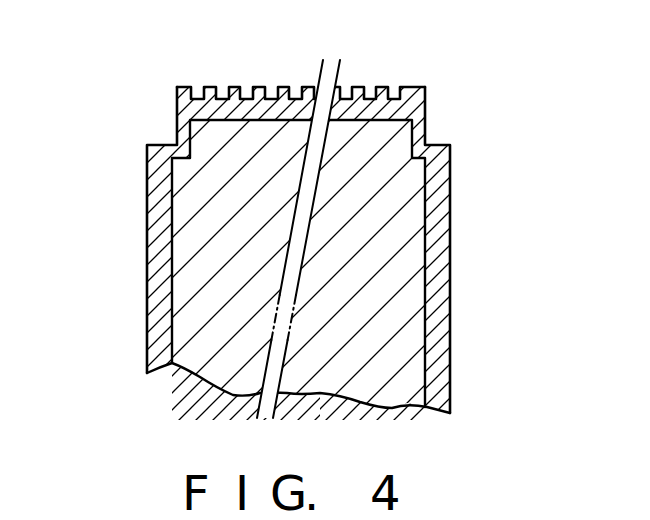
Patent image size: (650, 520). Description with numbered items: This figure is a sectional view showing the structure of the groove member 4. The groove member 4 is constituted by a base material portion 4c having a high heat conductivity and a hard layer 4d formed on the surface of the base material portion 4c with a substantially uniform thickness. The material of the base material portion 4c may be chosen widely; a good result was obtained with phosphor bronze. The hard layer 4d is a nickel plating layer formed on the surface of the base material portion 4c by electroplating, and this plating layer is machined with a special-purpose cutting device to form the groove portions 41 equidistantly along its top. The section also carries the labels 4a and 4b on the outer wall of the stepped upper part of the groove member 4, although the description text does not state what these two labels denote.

The groove member 4 is at (309, 222).
The upper cylindrical portion outer wall 4a is at (177, 120).
The stepped shoulder portion 4b is at (426, 122).
The base material portion 4c is at (420, 258).
The hard layer 4d is at (335, 222).
The groove portions 41 is at (223, 87).